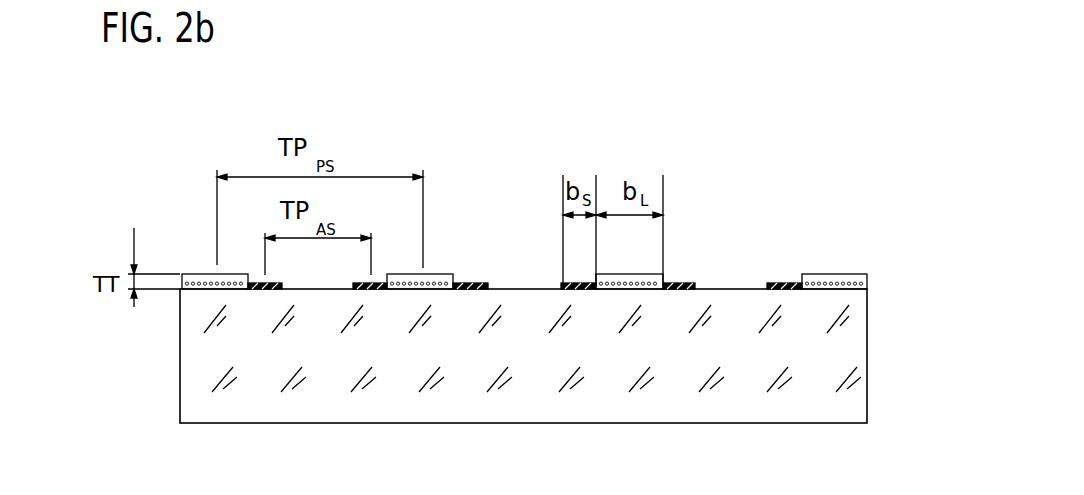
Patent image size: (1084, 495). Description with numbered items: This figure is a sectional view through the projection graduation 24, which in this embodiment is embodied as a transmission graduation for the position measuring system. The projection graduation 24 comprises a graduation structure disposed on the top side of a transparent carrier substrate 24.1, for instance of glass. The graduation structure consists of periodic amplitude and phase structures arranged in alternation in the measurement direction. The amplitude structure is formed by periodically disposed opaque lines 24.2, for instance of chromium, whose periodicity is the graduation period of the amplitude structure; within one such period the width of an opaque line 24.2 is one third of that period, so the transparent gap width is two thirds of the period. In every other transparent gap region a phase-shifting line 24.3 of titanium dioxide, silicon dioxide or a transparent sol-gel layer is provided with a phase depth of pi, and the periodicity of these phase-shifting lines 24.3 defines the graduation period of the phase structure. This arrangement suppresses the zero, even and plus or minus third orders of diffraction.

The projection graduation 24 is at (178, 443).
The transparent carrier substrate 24.1 is at (820, 382).
The opaque lines 24.2 is at (780, 285).
The phase-shifting lines 24.3 is at (850, 277).